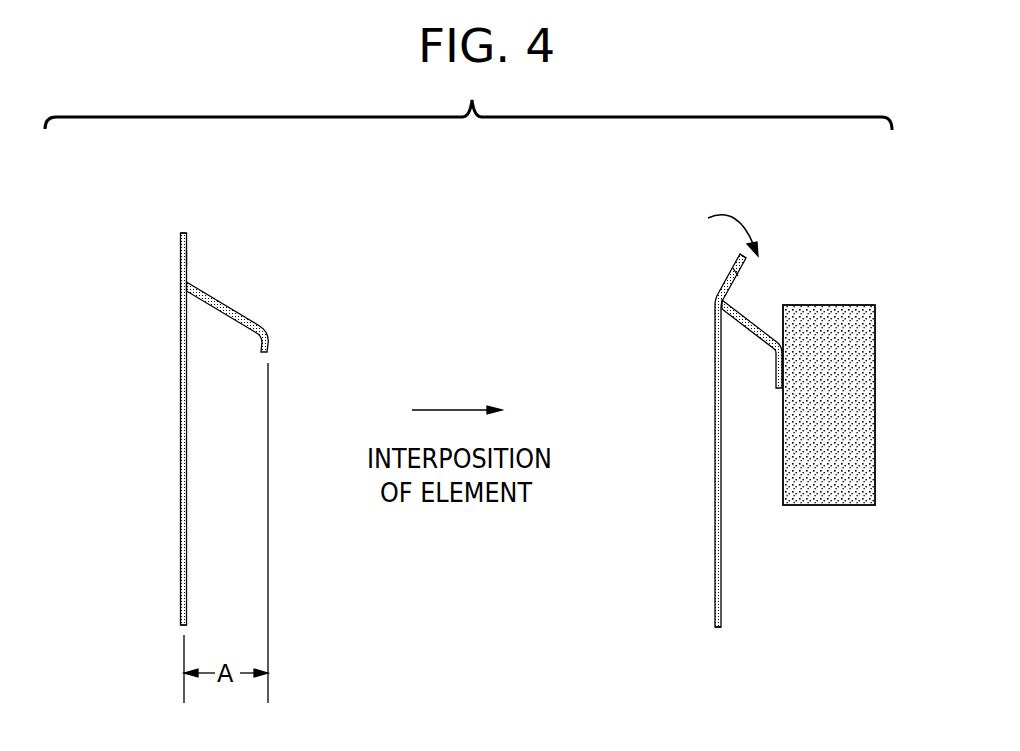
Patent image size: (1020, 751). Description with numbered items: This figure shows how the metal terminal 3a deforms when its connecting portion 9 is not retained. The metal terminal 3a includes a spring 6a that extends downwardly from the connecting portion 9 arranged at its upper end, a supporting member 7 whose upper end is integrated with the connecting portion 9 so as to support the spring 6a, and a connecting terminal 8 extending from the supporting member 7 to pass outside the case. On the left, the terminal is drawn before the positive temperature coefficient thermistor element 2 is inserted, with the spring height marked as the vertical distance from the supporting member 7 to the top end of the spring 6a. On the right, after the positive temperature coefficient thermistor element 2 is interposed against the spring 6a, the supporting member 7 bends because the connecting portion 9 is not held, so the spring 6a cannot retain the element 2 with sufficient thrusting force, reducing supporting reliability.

The metal terminal 3a is at (156, 415).
The supporting member 7 is at (182, 268).
The connecting portion 9 is at (203, 259).
The spring 6a is at (233, 308).
The connecting terminal 8 is at (180, 580).
The positive temperature coefficient thermistor element 2 is at (823, 506).